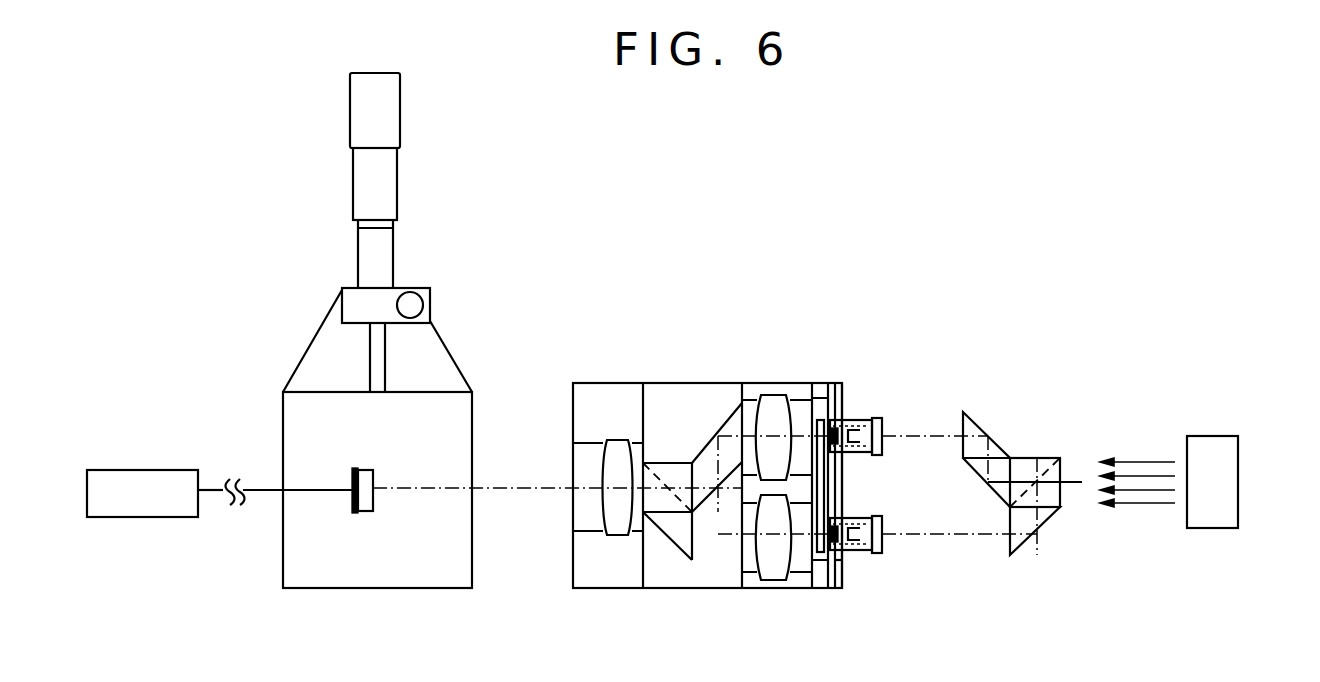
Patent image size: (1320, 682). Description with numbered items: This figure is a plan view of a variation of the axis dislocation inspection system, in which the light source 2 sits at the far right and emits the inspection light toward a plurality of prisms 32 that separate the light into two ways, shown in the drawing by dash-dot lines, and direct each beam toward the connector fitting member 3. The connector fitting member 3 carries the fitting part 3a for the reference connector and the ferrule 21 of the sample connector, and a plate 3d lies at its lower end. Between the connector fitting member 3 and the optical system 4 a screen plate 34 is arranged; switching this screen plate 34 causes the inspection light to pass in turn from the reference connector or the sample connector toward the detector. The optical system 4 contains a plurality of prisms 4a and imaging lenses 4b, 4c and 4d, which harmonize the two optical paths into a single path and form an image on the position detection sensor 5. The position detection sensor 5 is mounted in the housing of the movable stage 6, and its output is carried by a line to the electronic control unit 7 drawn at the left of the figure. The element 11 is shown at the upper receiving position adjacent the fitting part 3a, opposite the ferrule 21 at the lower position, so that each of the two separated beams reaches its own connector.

The light source 2 is at (1230, 455).
The connector fitting member 3 is at (848, 393).
The fitting part 3a is at (838, 381).
The housing bottom plate 3d is at (836, 590).
The optical system 4 is at (672, 447).
The prisms 4a is at (728, 430).
The imaging lens 4b is at (617, 443).
The imaging lens 4c is at (768, 398).
The imaging lens 4d is at (772, 575).
The position detection sensor (PSD) 5 is at (368, 513).
The movable stage 6 is at (440, 360).
The electronic control unit (ECU) 7 is at (162, 470).
The first light receiving element 11 is at (878, 420).
The ferrule 21 is at (879, 556).
The prisms 32 is at (970, 415).
The screen plate 34 is at (824, 487).